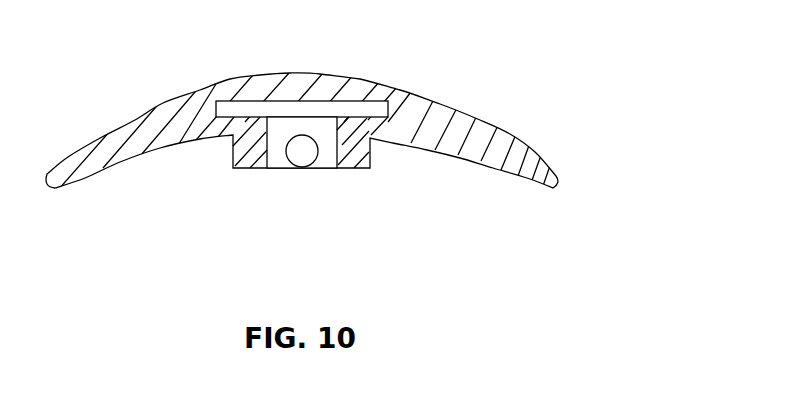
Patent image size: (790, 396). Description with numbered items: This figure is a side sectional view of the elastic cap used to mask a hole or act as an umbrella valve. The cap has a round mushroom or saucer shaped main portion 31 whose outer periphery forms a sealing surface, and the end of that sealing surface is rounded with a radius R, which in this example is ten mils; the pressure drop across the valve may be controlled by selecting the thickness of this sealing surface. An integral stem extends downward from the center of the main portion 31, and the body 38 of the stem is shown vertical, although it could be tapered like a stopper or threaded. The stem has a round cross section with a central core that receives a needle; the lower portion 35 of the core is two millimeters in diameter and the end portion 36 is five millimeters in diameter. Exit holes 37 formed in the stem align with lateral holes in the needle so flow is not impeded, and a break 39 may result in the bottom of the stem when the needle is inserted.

The main portion 31 is at (510, 133).
The lower portion of central core 35 is at (273, 168).
The end portion of central core 36 is at (393, 97).
The exit holes 37 is at (302, 150).
The body of stem 38 is at (372, 160).
The break 39 is at (298, 176).
The radius R is at (554, 190).